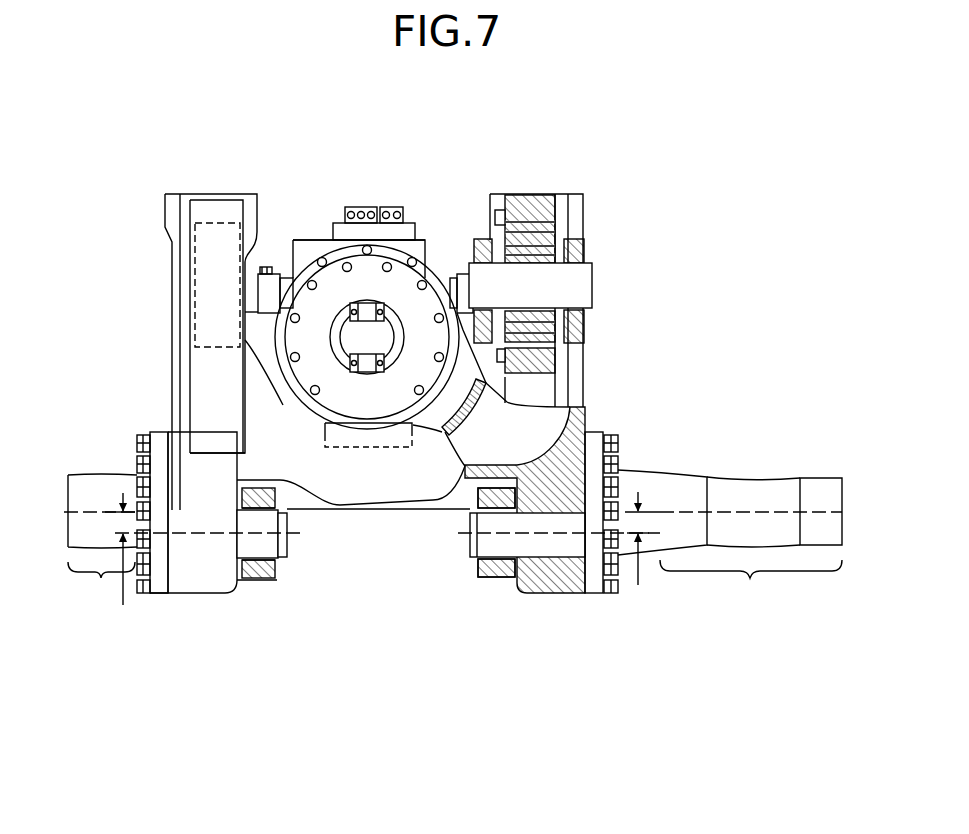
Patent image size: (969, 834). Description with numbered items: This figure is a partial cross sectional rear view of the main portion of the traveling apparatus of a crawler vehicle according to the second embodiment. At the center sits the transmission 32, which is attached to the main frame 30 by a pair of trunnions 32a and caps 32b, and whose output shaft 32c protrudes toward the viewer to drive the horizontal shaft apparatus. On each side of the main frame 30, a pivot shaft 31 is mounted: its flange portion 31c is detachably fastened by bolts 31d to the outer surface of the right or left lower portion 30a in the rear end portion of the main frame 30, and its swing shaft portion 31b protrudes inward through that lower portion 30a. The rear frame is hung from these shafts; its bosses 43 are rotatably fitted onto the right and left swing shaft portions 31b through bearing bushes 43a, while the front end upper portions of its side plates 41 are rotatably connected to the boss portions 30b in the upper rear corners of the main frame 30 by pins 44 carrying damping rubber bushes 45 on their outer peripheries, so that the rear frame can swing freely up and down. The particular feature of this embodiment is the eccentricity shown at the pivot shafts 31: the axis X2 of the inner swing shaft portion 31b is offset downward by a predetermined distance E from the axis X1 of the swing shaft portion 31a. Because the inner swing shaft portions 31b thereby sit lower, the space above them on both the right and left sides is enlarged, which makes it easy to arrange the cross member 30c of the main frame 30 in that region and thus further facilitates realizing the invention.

The main frame 30 is at (168, 318).
The lower portion 30a is at (208, 581).
The boss portion 30b is at (211, 208).
The cross member 30c is at (445, 468).
The pivot shaft 31 is at (88, 473).
The swing shaft portion 31a is at (452, 587).
The swing shaft portion 31b is at (273, 543).
The flange portion 31c is at (160, 593).
The bolt 31d is at (145, 593).
The transmission 32 is at (295, 240).
The trunnion 32a is at (320, 236).
The cap 32b is at (278, 280).
The output shaft 32c is at (362, 350).
The side plate 41 is at (587, 332).
The boss 43 is at (247, 580).
The bearing bush 43a is at (268, 580).
The pin 44 is at (578, 287).
The damping rubber bush 45 is at (556, 243).
The axis X1 is at (102, 510).
The axis X2 is at (226, 528).
The predetermined distance E is at (377, 561).